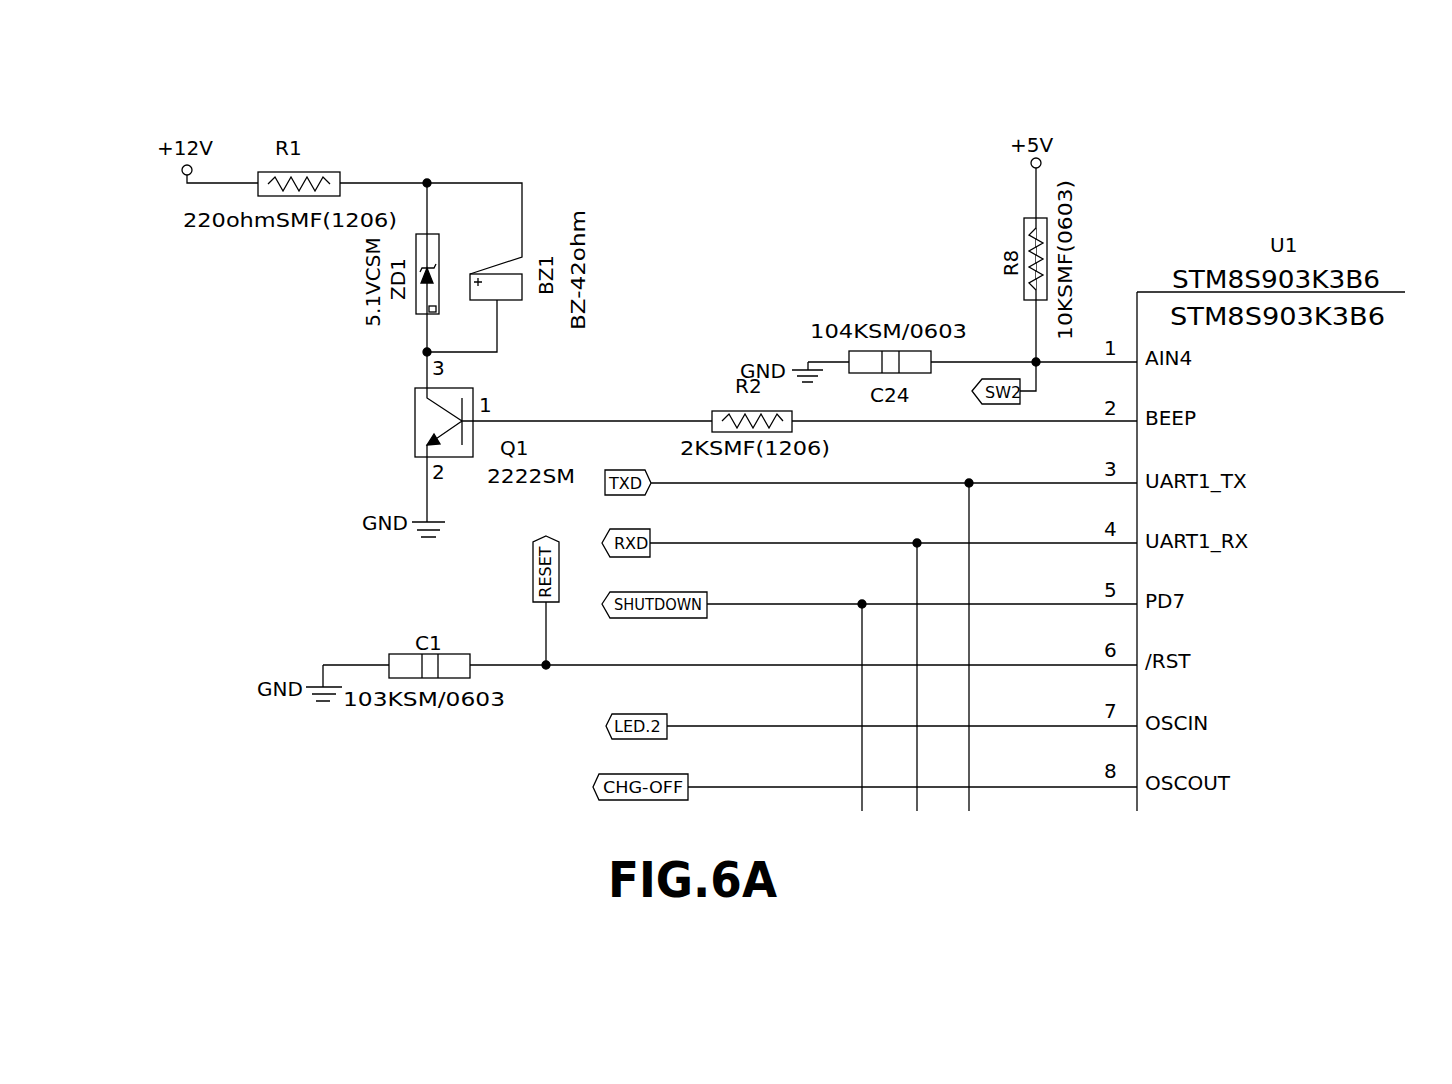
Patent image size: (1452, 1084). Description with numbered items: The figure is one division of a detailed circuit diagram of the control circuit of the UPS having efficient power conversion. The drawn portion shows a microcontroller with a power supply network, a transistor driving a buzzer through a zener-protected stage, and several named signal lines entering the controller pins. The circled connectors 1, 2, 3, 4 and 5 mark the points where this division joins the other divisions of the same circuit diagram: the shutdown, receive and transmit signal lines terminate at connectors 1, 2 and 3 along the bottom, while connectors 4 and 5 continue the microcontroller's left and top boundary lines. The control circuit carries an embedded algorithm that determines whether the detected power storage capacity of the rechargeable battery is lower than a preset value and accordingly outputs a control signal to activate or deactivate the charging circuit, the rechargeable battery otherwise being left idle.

The shutdown signal line 1 is at (862, 727).
The receive data line 2 is at (917, 697).
The transmit data line 3 is at (969, 667).
The microcontroller 4 is at (1137, 573).
The microcontroller 5 is at (1292, 292).